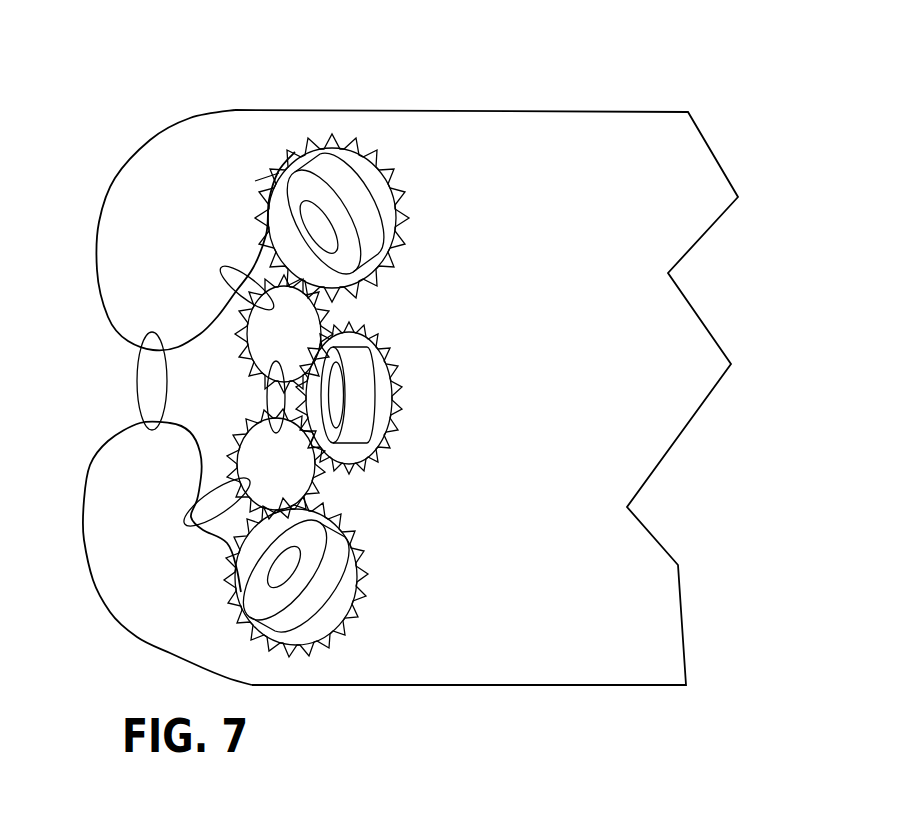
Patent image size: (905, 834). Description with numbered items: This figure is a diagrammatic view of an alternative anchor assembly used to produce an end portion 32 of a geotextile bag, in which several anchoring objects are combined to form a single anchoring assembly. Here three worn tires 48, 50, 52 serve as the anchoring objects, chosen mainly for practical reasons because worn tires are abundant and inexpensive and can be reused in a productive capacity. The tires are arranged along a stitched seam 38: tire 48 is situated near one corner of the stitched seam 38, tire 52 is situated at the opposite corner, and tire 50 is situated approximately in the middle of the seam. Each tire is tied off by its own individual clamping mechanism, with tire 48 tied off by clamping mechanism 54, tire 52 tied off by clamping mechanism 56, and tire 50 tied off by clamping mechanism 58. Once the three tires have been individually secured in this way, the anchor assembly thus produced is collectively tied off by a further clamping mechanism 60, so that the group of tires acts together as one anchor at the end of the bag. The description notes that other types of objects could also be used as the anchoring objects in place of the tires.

The cover plate 32 is at (483, 80).
The stitched seam 38 is at (391, 367).
The tire 48 is at (363, 231).
The tire 50 is at (360, 408).
The tire 52 is at (335, 574).
The clamping mechanism 54 is at (247, 277).
The clamping mechanism 56 is at (202, 528).
The clamping mechanism 58 is at (263, 385).
The clamping mechanism 60 is at (140, 385).